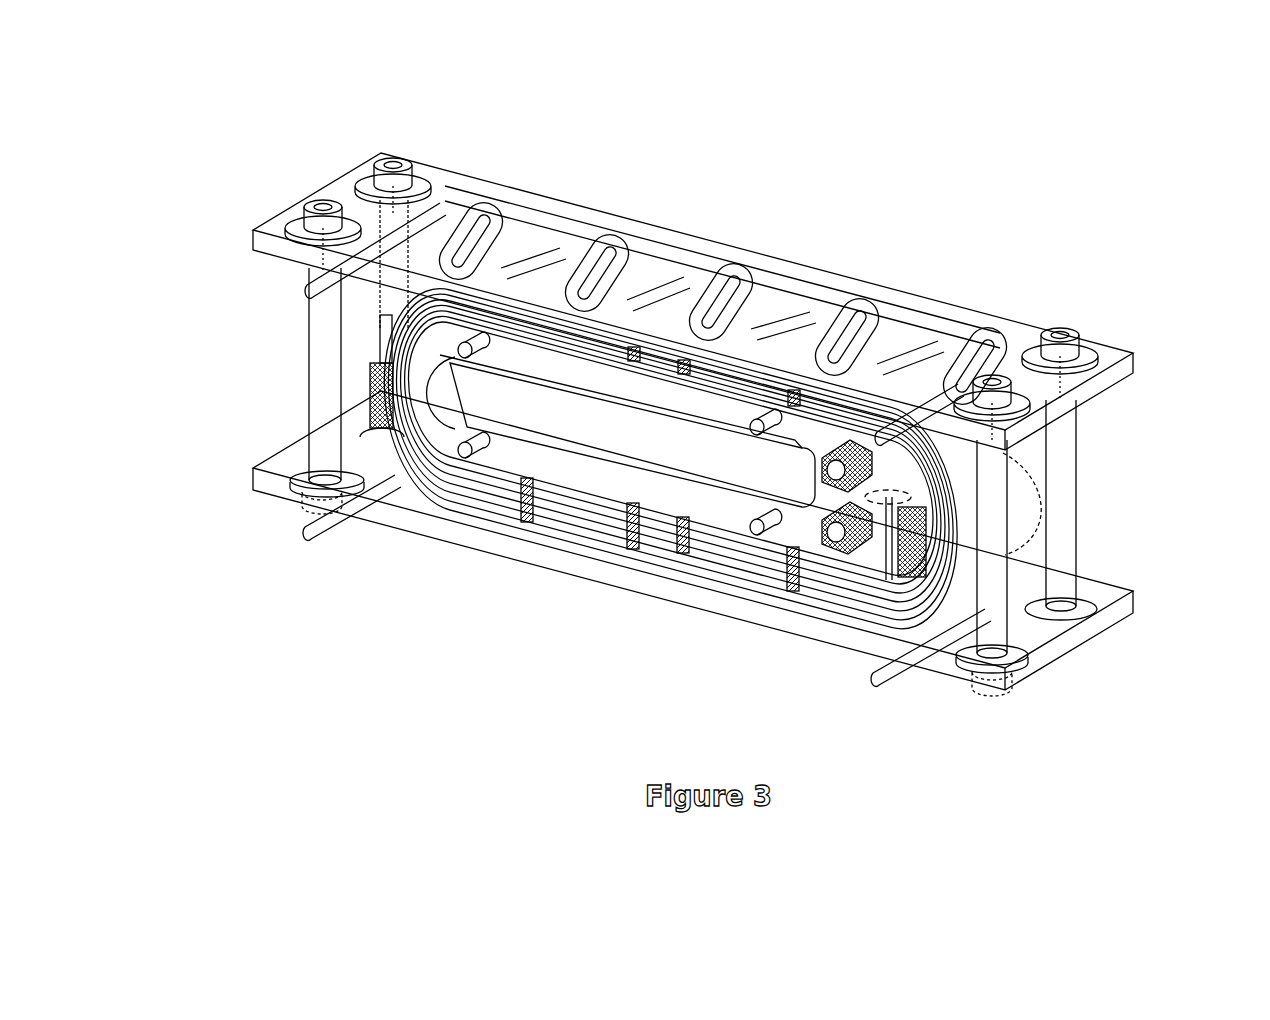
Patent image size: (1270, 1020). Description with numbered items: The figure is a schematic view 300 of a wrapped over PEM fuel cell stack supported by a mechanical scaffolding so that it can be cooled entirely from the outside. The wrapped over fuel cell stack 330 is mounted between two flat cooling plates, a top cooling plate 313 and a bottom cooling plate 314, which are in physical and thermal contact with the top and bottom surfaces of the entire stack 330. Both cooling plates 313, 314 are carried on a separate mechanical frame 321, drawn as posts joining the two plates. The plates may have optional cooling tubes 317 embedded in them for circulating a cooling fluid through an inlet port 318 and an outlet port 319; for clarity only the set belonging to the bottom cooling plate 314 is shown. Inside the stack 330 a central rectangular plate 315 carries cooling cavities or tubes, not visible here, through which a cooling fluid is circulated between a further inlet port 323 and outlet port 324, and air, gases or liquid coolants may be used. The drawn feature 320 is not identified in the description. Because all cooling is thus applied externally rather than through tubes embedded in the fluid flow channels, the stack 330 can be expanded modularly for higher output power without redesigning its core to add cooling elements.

The schematic view 300 is at (731, 85).
The top cooling plate 313 is at (705, 240).
The bottom cooling plate 314 is at (465, 533).
The central plate 315 is at (640, 487).
The cooling tubes 317 is at (957, 333).
The inlet port 318 is at (873, 678).
The outlet port 319 is at (307, 532).
The coil cross-section 320 is at (910, 498).
The mechanical frame 321 is at (313, 355).
The inlet port 323 is at (757, 527).
The outlet port 324 is at (472, 347).
The wrapped over fuel cell stack 330 is at (690, 565).